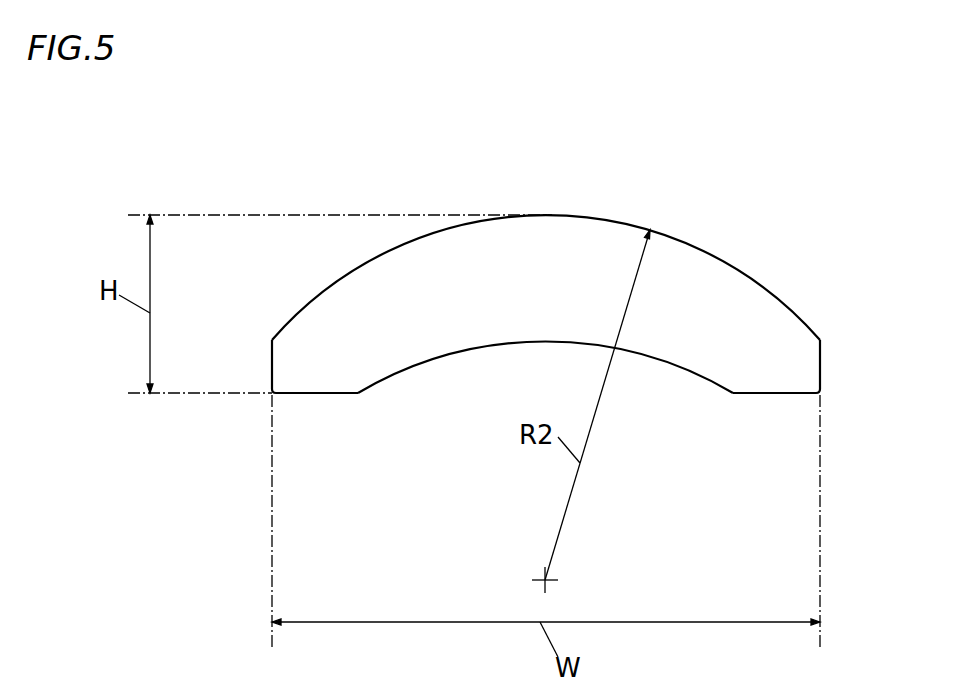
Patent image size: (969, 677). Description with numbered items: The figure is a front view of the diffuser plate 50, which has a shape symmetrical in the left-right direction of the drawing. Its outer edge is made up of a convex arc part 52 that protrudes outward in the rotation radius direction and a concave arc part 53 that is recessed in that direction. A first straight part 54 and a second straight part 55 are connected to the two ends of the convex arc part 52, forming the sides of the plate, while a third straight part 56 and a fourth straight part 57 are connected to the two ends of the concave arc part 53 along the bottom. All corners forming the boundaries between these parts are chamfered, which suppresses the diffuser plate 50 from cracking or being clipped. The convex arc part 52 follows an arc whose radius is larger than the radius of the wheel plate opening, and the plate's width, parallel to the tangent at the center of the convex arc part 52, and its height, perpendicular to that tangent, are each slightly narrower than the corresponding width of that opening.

The diffuser plate 50 is at (549, 295).
The convex arc part 52 is at (705, 252).
The concave arc part 53 is at (668, 363).
The first straight part 54 is at (271, 363).
The second straight part 55 is at (822, 363).
The third straight part 56 is at (312, 394).
The fourth straight part 57 is at (782, 394).